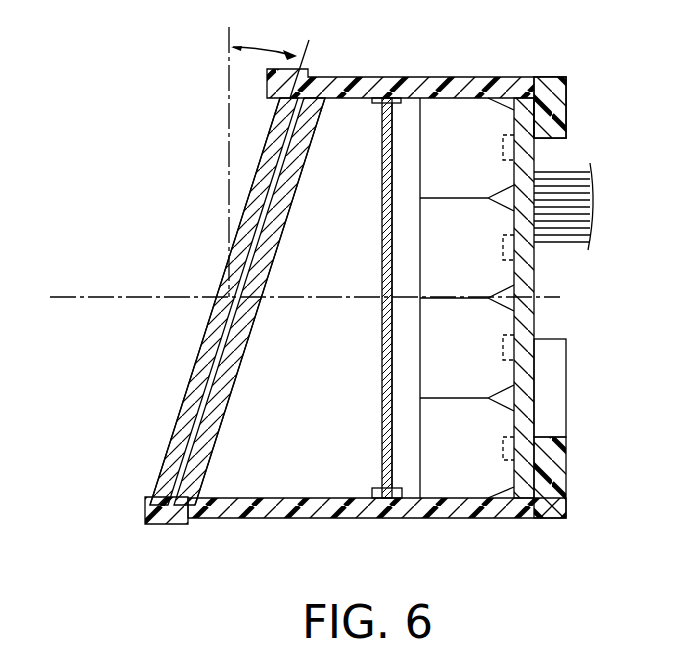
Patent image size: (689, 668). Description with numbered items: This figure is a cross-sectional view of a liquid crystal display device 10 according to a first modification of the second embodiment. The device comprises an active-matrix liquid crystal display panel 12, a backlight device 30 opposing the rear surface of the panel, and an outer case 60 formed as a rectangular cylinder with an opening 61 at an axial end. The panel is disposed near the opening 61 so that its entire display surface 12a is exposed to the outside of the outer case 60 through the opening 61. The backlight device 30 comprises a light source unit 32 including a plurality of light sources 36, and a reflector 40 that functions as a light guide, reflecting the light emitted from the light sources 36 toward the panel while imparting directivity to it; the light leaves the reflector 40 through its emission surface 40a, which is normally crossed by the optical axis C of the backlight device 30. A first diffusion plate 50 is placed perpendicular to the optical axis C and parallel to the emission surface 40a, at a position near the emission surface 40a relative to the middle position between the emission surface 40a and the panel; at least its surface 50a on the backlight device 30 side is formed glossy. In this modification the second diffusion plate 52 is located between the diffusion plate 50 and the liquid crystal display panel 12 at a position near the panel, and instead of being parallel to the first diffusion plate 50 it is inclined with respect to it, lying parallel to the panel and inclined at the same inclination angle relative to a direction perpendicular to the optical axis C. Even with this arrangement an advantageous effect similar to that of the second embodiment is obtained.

The liquid crystal display device 10 is at (584, 79).
The liquid crystal display panel 12 is at (225, 301).
The display surface 12a is at (186, 400).
The backlight device 30 is at (517, 268).
The light source unit 32 is at (528, 305).
The light sources 36 is at (510, 148).
The reflector 40 is at (432, 304).
The emission surface 40a is at (420, 120).
The diffusion plate 50 is at (401, 298).
The surface 50a is at (392, 328).
The second diffusion plate 52 is at (273, 253).
The outer case 60 is at (275, 512).
The opening 61 is at (157, 498).
The optical axis C is at (75, 298).